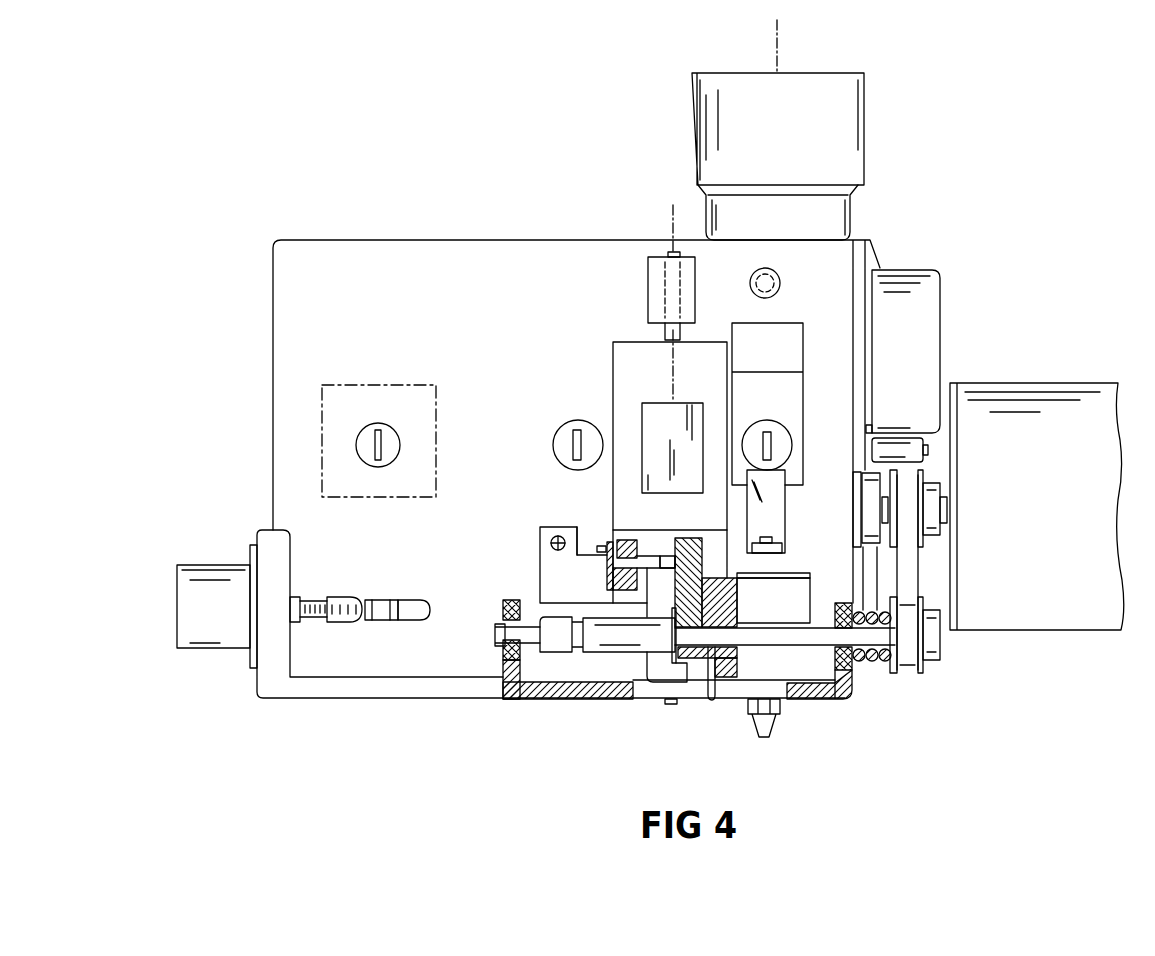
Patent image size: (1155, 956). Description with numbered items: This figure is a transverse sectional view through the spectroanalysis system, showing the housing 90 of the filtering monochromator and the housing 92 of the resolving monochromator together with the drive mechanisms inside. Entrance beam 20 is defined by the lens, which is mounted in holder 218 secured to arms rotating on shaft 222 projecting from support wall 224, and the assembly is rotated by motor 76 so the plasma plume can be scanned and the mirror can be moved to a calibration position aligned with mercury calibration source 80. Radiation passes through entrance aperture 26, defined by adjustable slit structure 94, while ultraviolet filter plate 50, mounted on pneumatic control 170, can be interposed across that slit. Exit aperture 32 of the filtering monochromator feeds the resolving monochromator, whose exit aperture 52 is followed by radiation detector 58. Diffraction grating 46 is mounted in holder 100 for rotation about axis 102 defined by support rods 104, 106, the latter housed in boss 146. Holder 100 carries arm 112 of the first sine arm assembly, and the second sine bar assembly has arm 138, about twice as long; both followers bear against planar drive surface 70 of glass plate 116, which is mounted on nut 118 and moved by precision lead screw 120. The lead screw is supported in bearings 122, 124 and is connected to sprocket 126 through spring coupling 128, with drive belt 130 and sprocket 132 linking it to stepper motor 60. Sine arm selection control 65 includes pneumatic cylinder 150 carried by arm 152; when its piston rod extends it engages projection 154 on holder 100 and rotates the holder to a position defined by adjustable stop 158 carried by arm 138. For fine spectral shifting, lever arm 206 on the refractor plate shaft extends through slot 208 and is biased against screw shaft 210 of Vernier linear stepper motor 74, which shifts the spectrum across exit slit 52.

The entrance beam 20 is at (777, 56).
The lens holder 218 is at (865, 153).
The grating axis 102 is at (668, 229).
The support rod 104 is at (668, 336).
The mercury calibration source 80 is at (778, 278).
The housing of resolving monochromator 92 is at (273, 310).
The radiation detector 58 is at (322, 435).
The exit aperture 52 is at (380, 445).
The exit aperture 32 is at (575, 443).
The diffraction grating 46 is at (648, 425).
The grating holder 100 is at (655, 537).
The adjustable slit structure 94 is at (795, 385).
The entrance aperture 26 is at (770, 445).
The ultraviolet filter plate 50 is at (778, 505).
The pneumatic control 170 is at (800, 590).
The planar sine arm drive surface 70 is at (673, 540).
The glass plate 116 is at (680, 568).
The arm 152 is at (558, 568).
The projection 154 is at (583, 548).
The pneumatic cylinder 150 is at (551, 541).
The adjustable stop 158 is at (600, 546).
The arm 112 is at (625, 542).
The arm 138 is at (612, 580).
The sine arm selection control 65 is at (536, 515).
The nut 118 is at (568, 642).
The bearing 122 is at (505, 650).
The boss 146 is at (658, 668).
The support rod 106 is at (672, 706).
The precision lead screw 120 is at (802, 640).
The housing of filtering monochromator 90 is at (838, 702).
The bearing 124 is at (850, 665).
The sprocket 126 is at (875, 658).
The spring coupling 128 is at (940, 655).
The drive belt 130 is at (910, 577).
The sprocket 132 is at (925, 478).
The shaft 222 is at (922, 450).
The motor 76 is at (925, 338).
The support wall 224 is at (867, 428).
The stepper motor 60 is at (1083, 383).
The stepper motor 74 is at (185, 615).
The screw shaft 210 is at (325, 613).
The lever arm 206 is at (380, 616).
The slot 208 is at (420, 618).